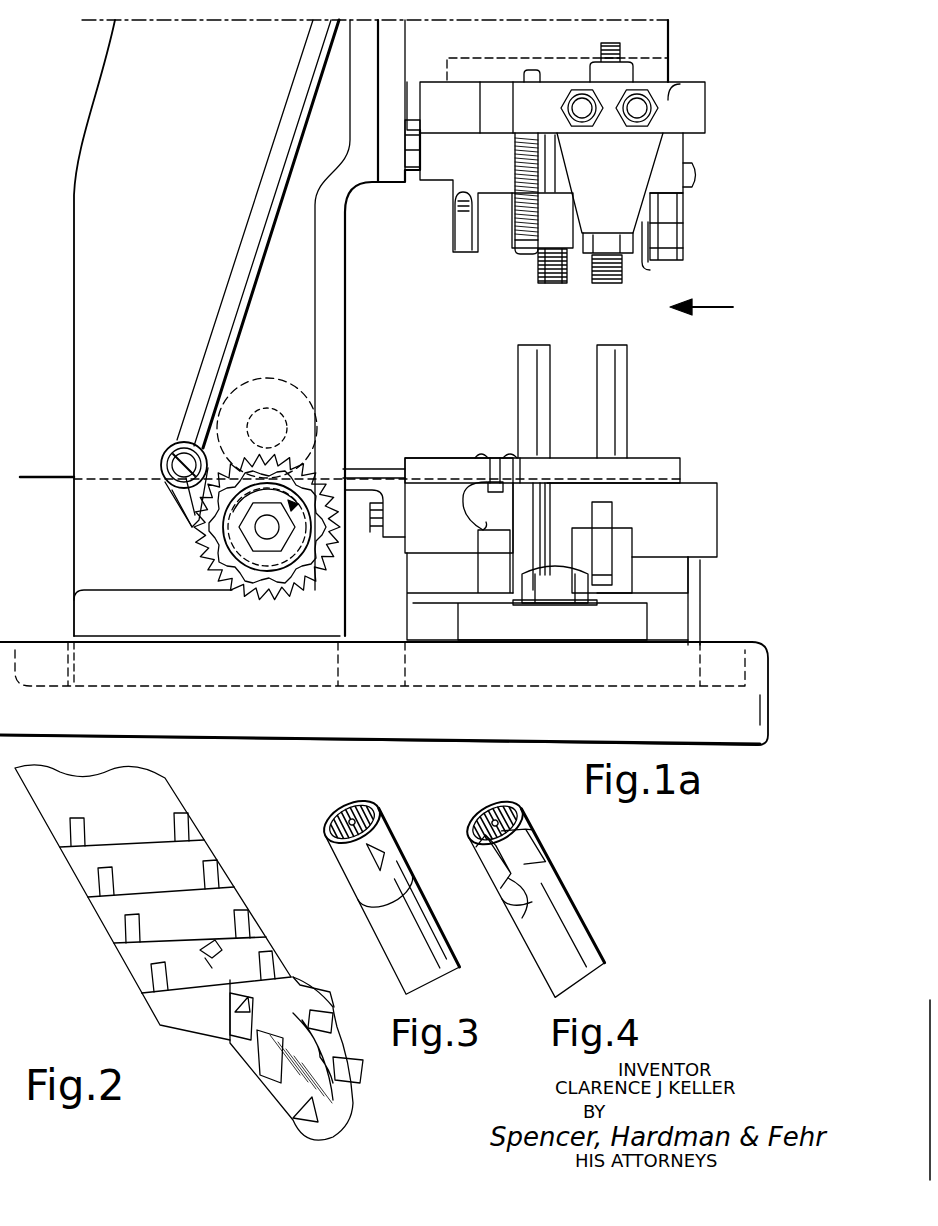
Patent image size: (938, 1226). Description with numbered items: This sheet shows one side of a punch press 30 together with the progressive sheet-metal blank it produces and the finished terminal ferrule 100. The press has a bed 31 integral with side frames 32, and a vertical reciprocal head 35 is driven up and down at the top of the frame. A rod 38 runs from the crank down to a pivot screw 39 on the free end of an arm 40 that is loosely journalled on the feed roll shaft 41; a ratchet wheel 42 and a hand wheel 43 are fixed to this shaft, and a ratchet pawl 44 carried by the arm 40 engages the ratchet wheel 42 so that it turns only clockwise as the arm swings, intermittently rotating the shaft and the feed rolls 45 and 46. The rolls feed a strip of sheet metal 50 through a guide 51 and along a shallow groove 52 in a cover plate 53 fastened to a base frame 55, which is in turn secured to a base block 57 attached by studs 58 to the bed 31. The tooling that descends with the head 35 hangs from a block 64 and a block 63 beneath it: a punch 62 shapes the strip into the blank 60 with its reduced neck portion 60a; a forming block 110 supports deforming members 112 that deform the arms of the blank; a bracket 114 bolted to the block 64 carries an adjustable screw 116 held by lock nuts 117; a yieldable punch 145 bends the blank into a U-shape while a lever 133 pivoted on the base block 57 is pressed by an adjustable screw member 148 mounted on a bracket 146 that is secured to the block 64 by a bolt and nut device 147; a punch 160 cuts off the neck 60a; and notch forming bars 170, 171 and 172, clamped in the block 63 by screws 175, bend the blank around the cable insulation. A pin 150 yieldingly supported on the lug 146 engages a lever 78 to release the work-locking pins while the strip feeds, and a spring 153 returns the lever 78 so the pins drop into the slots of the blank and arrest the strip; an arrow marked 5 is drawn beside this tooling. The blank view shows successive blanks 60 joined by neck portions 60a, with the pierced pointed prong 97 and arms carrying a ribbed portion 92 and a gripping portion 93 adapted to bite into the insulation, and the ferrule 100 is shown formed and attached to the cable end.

In FIG. 1A, the punch press 30 is at (185, 88).
In FIG. 1A, the bed 31 is at (715, 654).
In FIG. 1A, the side frames 32 is at (346, 330).
In FIG. 1A, the vertical reciprocal head 35 is at (668, 47).
In FIG. 1A, the rod 38 is at (252, 216).
In FIG. 1A, the pivot screw 39 is at (172, 452).
In FIG. 1A, the arm 40 is at (167, 508).
In FIG. 1A, the feed roll shaft 41 is at (262, 530).
In FIG. 1A, the ratchet wheel 42 is at (326, 584).
In FIG. 1A, the hand wheel 43 is at (262, 592).
In FIG. 1A, the ratchet pawl 44 is at (190, 528).
In FIG. 1A, the feed roll 45 is at (280, 374).
In FIG. 1A, the feed roll 46 is at (233, 598).
In FIG. 1A, the strip of sheet metal 50 is at (52, 472).
In FIG. 2, the strip of sheet metal 50 is at (146, 780).
In FIG. 1A, the guide 51 is at (366, 469).
In FIG. 1A, the shallow groove 52 is at (441, 477).
In FIG. 1A, the cover plate 53 is at (419, 458).
In FIG. 1A, the base frame 55 is at (718, 527).
In FIG. 1A, the base block 57 is at (702, 614).
In FIG. 1A, the studs 58 is at (548, 594).
In FIG. 2, the blank 60 is at (222, 863).
In FIG. 2, the neck portion 60a is at (165, 895).
In FIG. 1A, the punch 62 is at (452, 233).
In FIG. 1A, the block 63 is at (685, 157).
In FIG. 1A, the block 64 is at (708, 114).
In FIG. 1A, the lever 78 is at (536, 460).
In FIG. 2, the ribbed portion 92 is at (270, 968).
In FIG. 4, the ribbed portion 92 is at (508, 897).
In FIG. 2, the gripping portion 93 is at (291, 970).
In FIG. 4, the gripping portion 93 is at (520, 918).
In FIG. 2, the pointed prong 97 is at (208, 938).
In FIG. 3, the terminal ferrule 100 is at (380, 833).
In FIG. 4, the terminal ferrule 100 is at (528, 823).
In FIG. 1A, the forming block 110 is at (536, 226).
In FIG. 1A, the deforming members 112 is at (546, 270).
In FIG. 1A, the bracket 114 is at (580, 236).
In FIG. 1A, the screw 116 is at (546, 278).
In FIG. 1A, the lock nuts 117 is at (564, 268).
In FIG. 1A, the lever 133 is at (614, 521).
In FIG. 1A, the yieldable punch 145 is at (595, 282).
In FIG. 1A, the bracket 146 is at (674, 93).
In FIG. 1A, the bolt and nut device 147 is at (640, 118).
In FIG. 1A, the adjustable screw member 148 is at (610, 274).
In FIG. 1A, the pin 150 is at (520, 258).
In FIG. 1A, the spring 153 is at (462, 521).
In FIG. 1A, the punch 160 is at (650, 262).
In FIG. 1A, the notch forming bar 170 is at (683, 212).
In FIG. 1A, the notch forming bar 171 is at (683, 230).
In FIG. 1A, the notch forming bar 172 is at (683, 250).
In FIG. 1A, the screws 175 is at (699, 177).
In FIG. 1A, the section arrow 5 is at (746, 321).